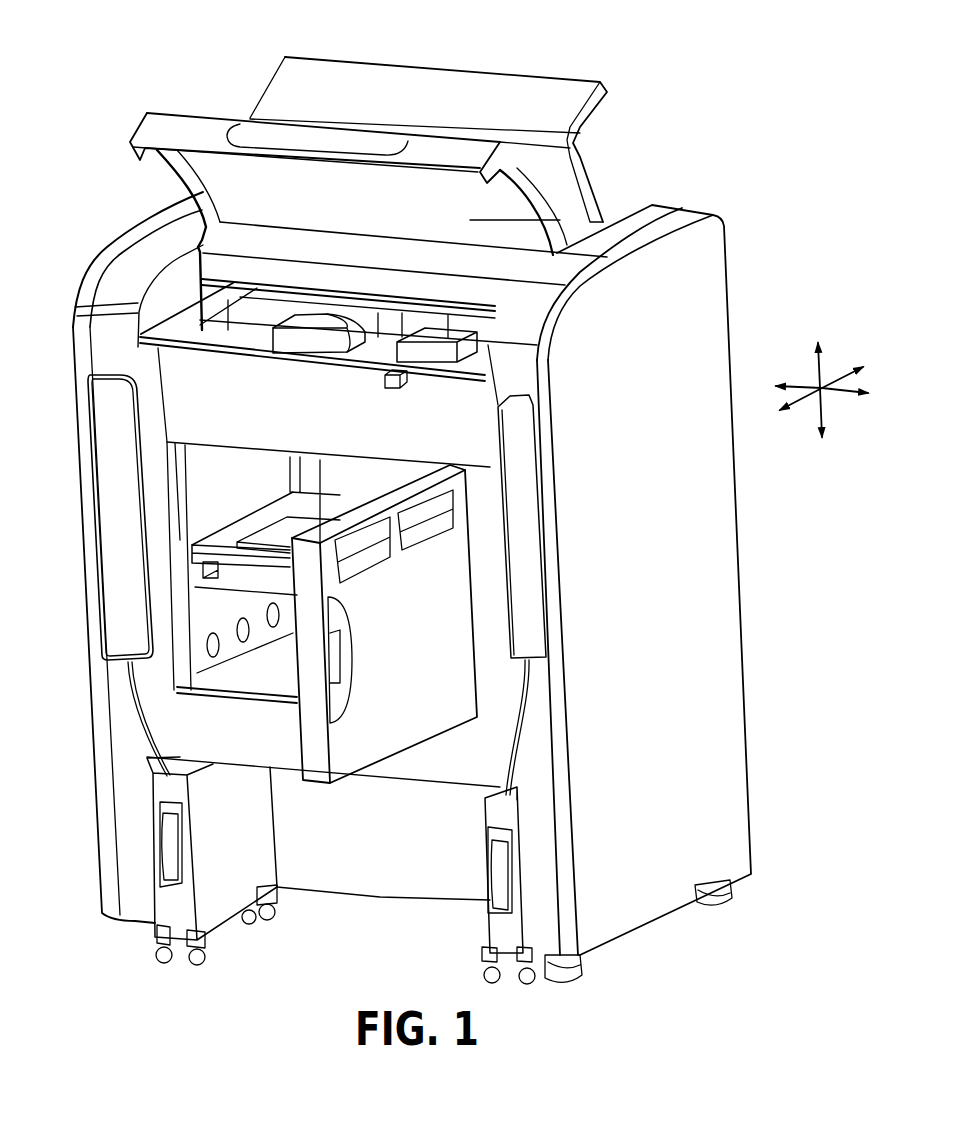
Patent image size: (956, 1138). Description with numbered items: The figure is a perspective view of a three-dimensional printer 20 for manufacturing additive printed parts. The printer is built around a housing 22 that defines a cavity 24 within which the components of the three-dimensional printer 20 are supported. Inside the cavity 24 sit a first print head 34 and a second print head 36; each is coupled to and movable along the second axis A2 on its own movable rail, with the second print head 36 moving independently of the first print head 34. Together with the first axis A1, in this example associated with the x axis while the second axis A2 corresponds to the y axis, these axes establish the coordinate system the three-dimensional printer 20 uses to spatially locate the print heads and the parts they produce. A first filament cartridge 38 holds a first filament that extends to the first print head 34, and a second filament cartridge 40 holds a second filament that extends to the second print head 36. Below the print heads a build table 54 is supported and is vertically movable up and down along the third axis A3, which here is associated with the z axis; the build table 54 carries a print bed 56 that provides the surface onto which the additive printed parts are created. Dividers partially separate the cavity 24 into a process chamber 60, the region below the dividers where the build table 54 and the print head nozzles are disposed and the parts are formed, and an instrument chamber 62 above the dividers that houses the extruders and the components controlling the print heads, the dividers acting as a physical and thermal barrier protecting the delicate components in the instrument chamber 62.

The three-dimensional printer 20 is at (135, 40).
The housing 22 is at (722, 722).
The cavity 24 is at (189, 268).
The first print head 34 is at (325, 318).
The second print head 36 is at (430, 320).
The first filament cartridge 38 is at (170, 908).
The second filament cartridge 40 is at (500, 932).
The build table 54 is at (203, 547).
The print bed 56 is at (265, 537).
The process chamber 60 is at (266, 466).
The instrument chamber 62 is at (170, 304).
The first axis A1 is at (842, 396).
The second axis A2 is at (850, 368).
The third axis A3 is at (818, 370).